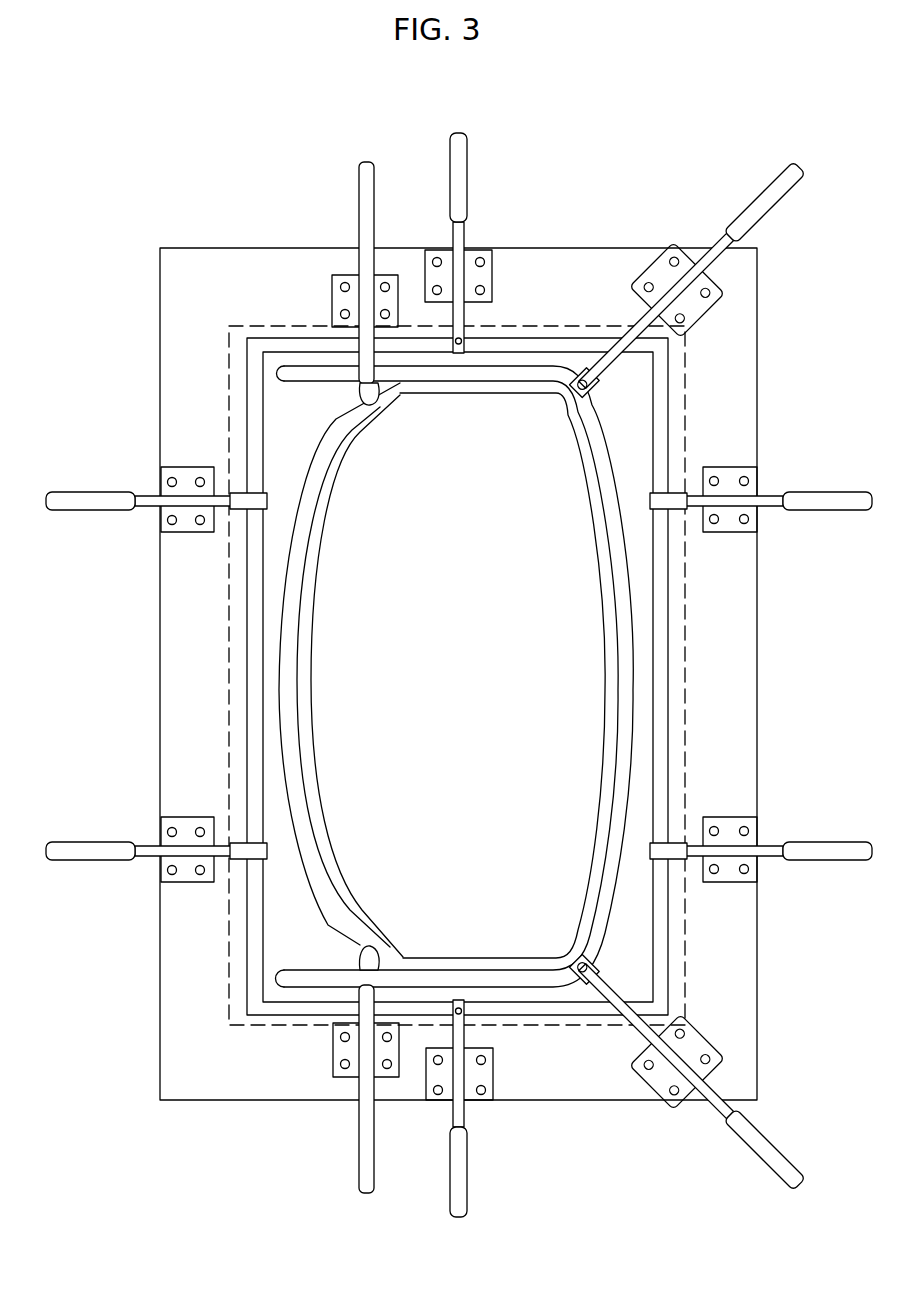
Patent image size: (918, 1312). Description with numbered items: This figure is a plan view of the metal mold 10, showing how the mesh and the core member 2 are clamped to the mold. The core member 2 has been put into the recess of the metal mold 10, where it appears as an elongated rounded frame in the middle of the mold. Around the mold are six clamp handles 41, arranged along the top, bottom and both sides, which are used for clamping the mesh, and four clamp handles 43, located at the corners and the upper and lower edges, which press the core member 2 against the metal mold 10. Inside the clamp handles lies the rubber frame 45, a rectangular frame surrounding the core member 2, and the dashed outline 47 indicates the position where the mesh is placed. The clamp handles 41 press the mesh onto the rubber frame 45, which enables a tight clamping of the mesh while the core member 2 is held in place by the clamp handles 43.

The core member 2 is at (288, 680).
The metal mold 10 is at (196, 268).
The clamp handles 41 is at (462, 176).
The clamp handles 43 is at (368, 202).
The rubber frame 45 is at (285, 342).
The position where the mesh is placed 47 is at (229, 370).